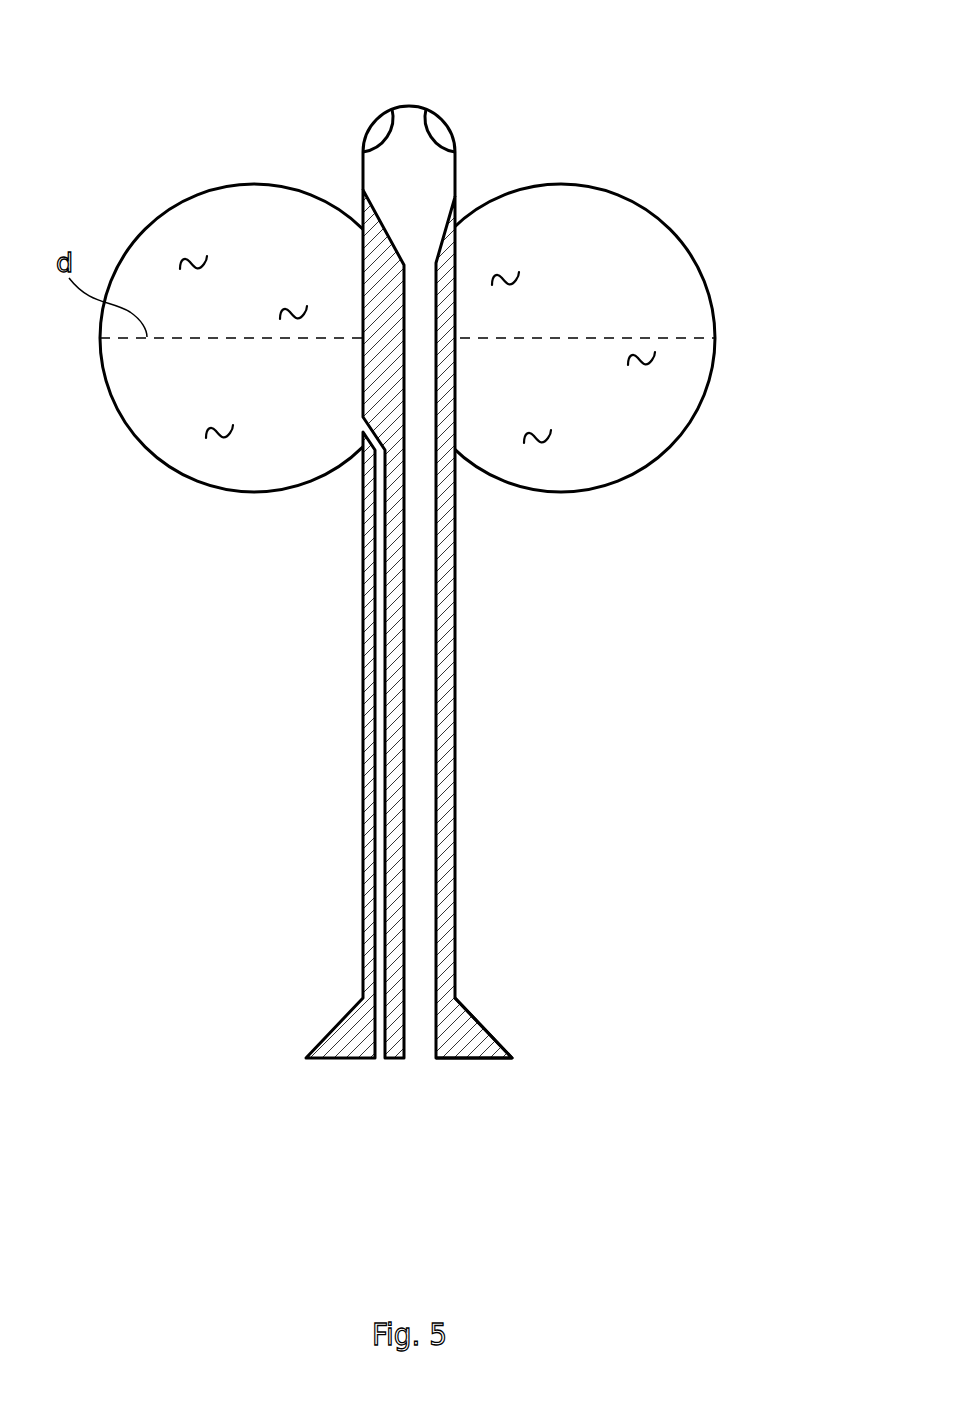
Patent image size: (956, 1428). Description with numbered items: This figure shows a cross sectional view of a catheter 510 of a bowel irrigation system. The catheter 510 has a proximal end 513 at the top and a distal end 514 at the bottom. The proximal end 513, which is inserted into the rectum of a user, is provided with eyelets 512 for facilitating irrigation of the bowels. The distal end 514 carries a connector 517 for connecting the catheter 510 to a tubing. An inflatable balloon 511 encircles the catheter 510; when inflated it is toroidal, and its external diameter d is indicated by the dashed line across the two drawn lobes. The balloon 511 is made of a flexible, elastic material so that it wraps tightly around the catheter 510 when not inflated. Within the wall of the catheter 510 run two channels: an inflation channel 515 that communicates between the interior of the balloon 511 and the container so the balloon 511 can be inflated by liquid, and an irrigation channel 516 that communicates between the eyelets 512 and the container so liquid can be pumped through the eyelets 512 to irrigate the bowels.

The catheter 510 is at (193, 113).
The inflatable balloon 511 is at (688, 245).
The eyelets 512 is at (443, 128).
The proximal end 513 is at (413, 105).
The distal end 514 is at (472, 1062).
The inflation channel 515 is at (380, 645).
The irrigation channel 516 is at (418, 760).
The connector 517 is at (337, 1022).